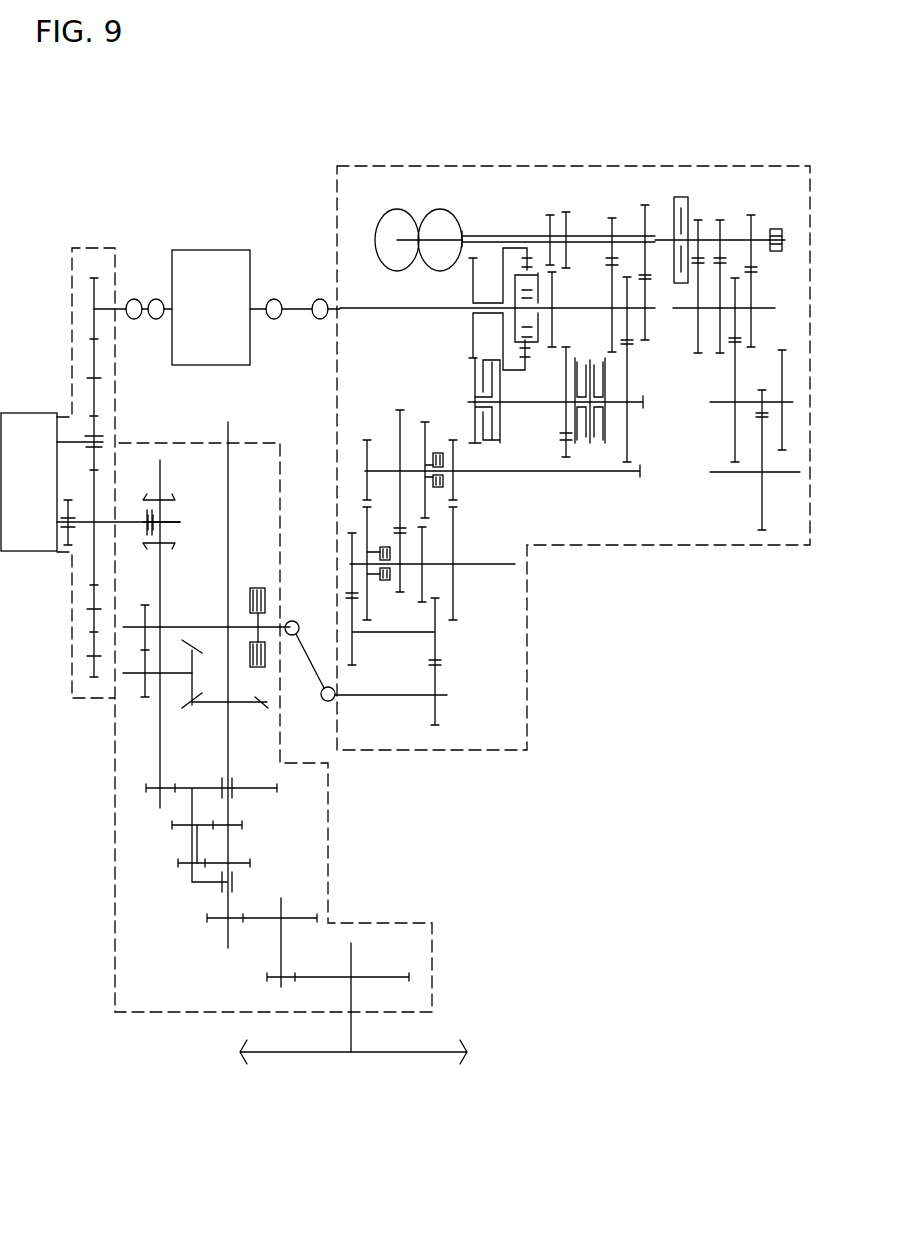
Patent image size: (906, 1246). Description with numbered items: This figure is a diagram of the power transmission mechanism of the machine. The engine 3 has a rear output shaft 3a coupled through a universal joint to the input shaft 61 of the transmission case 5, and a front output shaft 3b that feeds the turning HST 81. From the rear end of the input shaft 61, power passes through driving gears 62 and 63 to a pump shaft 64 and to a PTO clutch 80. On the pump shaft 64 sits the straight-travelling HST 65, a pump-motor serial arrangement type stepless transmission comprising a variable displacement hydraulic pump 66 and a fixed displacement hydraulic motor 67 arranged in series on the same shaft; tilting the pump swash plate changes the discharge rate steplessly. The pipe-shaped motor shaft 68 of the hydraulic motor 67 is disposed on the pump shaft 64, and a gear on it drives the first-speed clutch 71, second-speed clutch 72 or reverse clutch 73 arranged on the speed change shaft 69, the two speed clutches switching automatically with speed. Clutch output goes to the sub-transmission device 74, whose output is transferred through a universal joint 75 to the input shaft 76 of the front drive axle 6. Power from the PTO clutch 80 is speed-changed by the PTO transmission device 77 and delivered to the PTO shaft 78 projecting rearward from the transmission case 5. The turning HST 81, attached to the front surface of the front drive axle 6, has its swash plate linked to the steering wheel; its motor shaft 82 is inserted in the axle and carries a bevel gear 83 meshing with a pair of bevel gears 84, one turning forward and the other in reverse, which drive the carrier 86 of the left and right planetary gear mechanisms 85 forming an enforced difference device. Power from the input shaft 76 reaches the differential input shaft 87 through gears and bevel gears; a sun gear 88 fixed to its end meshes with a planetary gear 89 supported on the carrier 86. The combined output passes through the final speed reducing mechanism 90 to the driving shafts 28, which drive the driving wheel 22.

The engine 3 is at (200, 250).
The rear output shaft 3a is at (258, 308).
The front output shaft 3b is at (168, 308).
The transmission case 5 is at (652, 548).
The front drive axle 6 is at (268, 443).
The driving wheel 22 is at (468, 1054).
The driving shafts 28 is at (352, 1033).
The input shaft 61 is at (412, 310).
The driving gear 62 is at (652, 340).
The driving gear 63 is at (650, 203).
The pump shaft 64 is at (632, 233).
The straight-travelling HST 65 is at (426, 170).
The hydraulic pump 66 is at (377, 223).
The hydraulic motor 67 is at (451, 194).
The motor shaft 68 is at (518, 235).
The speed change shaft 69 is at (635, 405).
The first-speed clutch 71 is at (598, 455).
The second-speed clutch 72 is at (492, 445).
The reverse clutch 73 is at (577, 455).
The sub-transmission device 74 is at (388, 617).
The universal joint 75 is at (300, 620).
The input shaft 76 is at (268, 620).
The PTO transmission device 77 is at (746, 192).
The PTO shaft 78 is at (790, 480).
The PTO clutch 80 is at (678, 197).
The turning HST 81 is at (33, 412).
The motor shaft 82 is at (115, 522).
The bevel gear 83 is at (143, 540).
The bevel gears 84 is at (172, 505).
The planetary gear mechanism 85 is at (150, 849).
The carrier 86 is at (182, 788).
The differential input shaft 87 is at (230, 720).
The sun gear 88 is at (243, 825).
The planetary gear 89 is at (200, 827).
The final speed reducing mechanism 90 is at (330, 943).